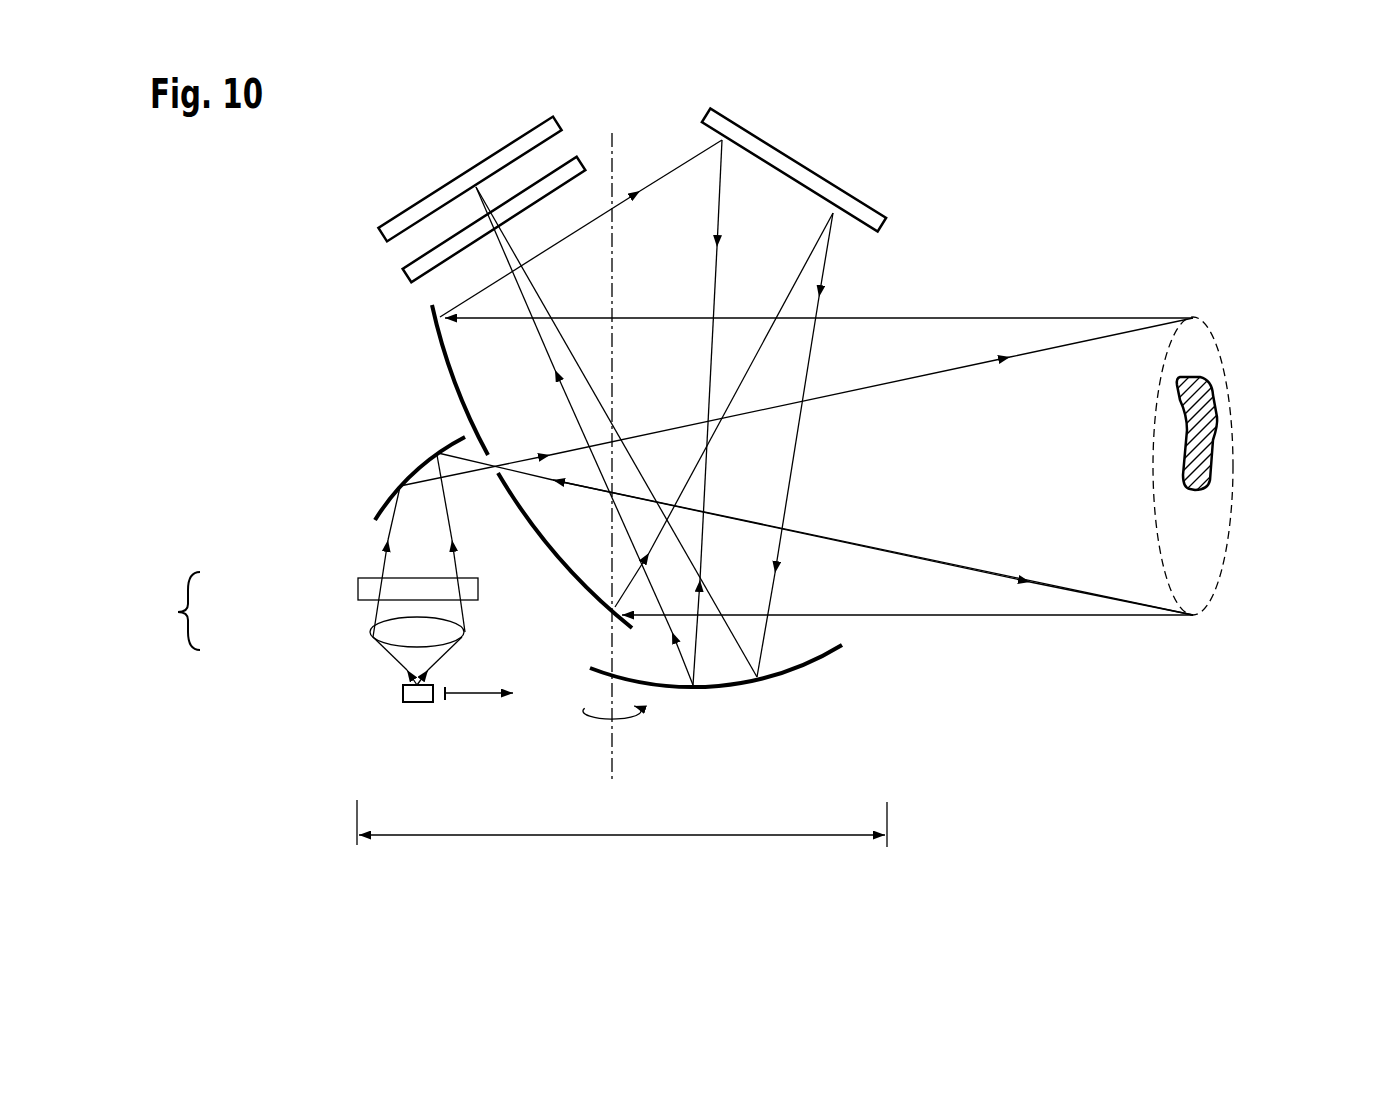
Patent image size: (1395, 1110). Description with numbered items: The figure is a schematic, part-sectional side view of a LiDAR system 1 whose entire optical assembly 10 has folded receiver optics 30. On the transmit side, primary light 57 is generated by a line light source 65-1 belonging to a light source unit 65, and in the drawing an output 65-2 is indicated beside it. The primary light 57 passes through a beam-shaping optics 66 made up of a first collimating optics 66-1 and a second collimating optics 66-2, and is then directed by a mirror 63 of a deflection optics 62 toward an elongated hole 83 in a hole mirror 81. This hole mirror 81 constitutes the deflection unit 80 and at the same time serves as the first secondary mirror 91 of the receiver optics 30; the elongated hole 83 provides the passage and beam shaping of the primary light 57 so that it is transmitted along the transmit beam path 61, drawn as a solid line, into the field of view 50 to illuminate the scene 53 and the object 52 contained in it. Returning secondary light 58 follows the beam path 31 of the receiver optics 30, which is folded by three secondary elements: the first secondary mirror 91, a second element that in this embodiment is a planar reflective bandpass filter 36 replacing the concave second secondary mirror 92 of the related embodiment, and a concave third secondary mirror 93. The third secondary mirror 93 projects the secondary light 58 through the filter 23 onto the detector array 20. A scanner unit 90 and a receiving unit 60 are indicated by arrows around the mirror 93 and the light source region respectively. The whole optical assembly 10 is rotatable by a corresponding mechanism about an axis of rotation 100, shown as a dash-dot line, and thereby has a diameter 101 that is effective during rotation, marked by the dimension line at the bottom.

The LiDAR system 1 is at (751, 471).
The optical assembly 10 is at (320, 227).
The detector array 20 is at (380, 235).
The filter 23 is at (407, 280).
The receiver optics 30 is at (413, 185).
The beam path 31 is at (595, 207).
The reflective bandpass filter 36 is at (794, 164).
The second secondary mirror 92 is at (812, 168).
The field of view 50 is at (1234, 330).
The object 52 is at (1205, 425).
The scene 53 is at (1272, 370).
The primary light 57 is at (905, 380).
The secondary light 58 is at (572, 235).
The receiving unit 60 is at (292, 658).
The transmit beam path 61 is at (368, 567).
The deflection optics 62 is at (310, 505).
The mirror 63 is at (395, 482).
The light source unit 65 is at (413, 727).
The line light source 65-1 is at (403, 693).
The detector output 65-2 is at (468, 695).
The beam-shaping optics 66 is at (313, 611).
The first collimating optics 66-1 is at (358, 588).
The second collimating optics 66-2 is at (373, 632).
The deflection unit 80 is at (453, 466).
The hole mirror 81 is at (453, 466).
The first secondary mirror 91 is at (438, 337).
The elongated hole 83 is at (497, 445).
The scanner unit 90 is at (592, 367).
The third secondary mirror 93 is at (797, 672).
The axis of rotation 100 is at (613, 767).
The diameter 101 is at (560, 833).